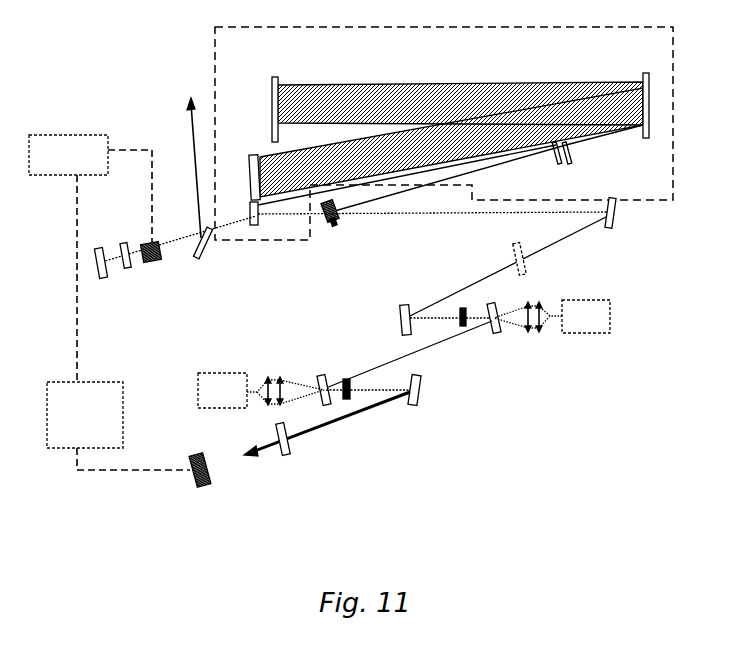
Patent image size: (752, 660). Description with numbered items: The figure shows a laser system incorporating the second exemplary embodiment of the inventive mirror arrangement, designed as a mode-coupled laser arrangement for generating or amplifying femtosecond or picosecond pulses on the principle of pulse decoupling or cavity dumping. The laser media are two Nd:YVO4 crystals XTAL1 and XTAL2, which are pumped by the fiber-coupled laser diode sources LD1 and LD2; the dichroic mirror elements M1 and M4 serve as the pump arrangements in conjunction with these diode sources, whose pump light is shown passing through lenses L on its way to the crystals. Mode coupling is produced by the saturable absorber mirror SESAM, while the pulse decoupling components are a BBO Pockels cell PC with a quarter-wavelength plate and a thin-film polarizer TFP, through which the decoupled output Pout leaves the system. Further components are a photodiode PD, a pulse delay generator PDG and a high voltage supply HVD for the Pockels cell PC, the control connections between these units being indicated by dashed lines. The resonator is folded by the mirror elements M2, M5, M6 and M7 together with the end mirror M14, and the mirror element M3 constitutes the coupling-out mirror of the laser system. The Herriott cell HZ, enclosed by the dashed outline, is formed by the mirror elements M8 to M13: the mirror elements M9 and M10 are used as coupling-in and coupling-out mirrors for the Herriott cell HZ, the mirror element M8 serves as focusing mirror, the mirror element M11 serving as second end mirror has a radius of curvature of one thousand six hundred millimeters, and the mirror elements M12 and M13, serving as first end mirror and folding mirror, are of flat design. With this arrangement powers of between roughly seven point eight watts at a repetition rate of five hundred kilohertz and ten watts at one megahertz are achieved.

The Herriott cell HZ is at (444, 133).
The mirror element M13 is at (276, 93).
The mirror element M12 is at (655, 91).
The mirror element M11 is at (241, 177).
The mirror element M10 is at (487, 168).
The mirror element M9 is at (410, 173).
The mirror element M8 is at (243, 214).
The mirror element M7 is at (625, 213).
The mirror element M6 is at (536, 267).
The mirror element M5 is at (396, 310).
The mirror element M4 is at (506, 335).
The mirror element M3 is at (292, 453).
The mirror element M2 is at (432, 395).
The mirror element M1 is at (321, 382).
The end mirror M14 is at (109, 275).
The saturable absorber mirror SESAM is at (344, 229).
The laser medium XTAL1 is at (365, 376).
The laser medium XTAL2 is at (478, 336).
The laser diode source LD1 is at (261, 390).
The laser diode source LD2 is at (552, 316).
The pump focusing lenses L is at (405, 353).
The Pockels cell PC is at (152, 264).
The thin-film polarizer TFP is at (214, 257).
The high voltage supply HVD is at (90, 188).
The pulse delay generator PDG is at (118, 322).
The photodiode PD is at (202, 483).
The output power / output beam Pout is at (295, 277).